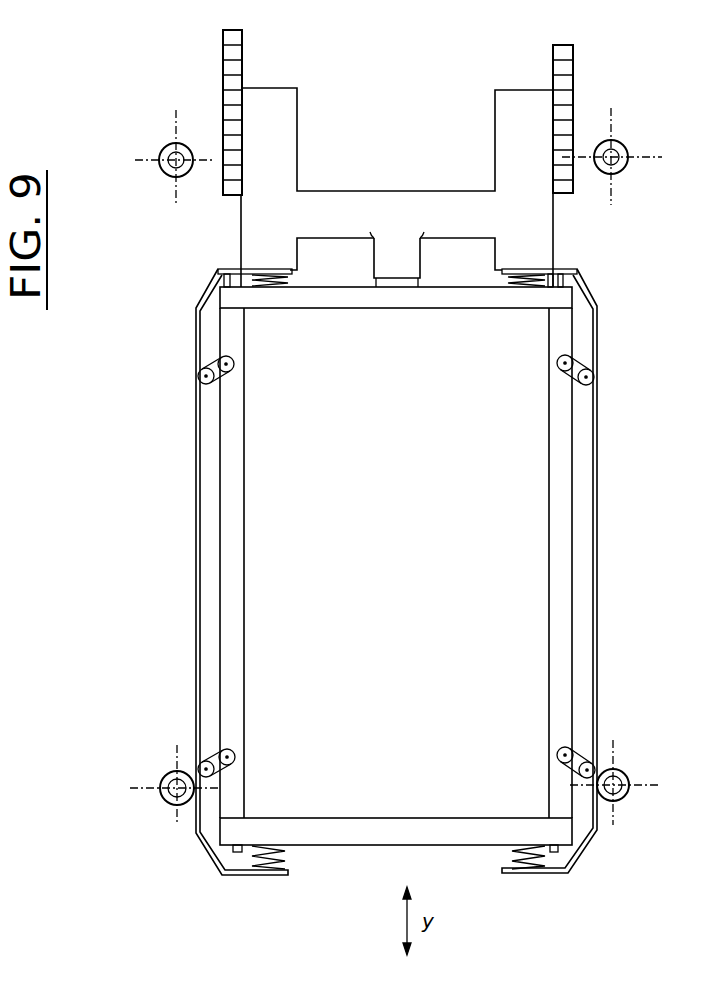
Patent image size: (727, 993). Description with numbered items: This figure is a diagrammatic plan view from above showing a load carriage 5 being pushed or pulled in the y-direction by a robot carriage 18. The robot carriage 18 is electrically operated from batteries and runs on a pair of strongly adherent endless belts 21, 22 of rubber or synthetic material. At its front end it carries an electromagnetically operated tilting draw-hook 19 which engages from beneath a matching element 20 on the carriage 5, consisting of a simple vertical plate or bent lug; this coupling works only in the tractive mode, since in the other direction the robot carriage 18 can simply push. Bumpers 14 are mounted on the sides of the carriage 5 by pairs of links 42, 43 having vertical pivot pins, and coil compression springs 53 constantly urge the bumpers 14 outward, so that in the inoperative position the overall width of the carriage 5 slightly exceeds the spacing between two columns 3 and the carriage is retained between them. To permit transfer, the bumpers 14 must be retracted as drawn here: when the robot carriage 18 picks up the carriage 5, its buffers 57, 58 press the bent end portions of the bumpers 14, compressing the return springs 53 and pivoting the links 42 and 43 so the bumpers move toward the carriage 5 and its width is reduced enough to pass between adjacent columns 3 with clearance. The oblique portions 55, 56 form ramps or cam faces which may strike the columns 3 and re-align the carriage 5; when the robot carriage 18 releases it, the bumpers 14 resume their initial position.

The columns 3 is at (163, 782).
The carriage 5 is at (396, 563).
The bumpers 14 is at (195, 546).
The robot carriage 18 is at (523, 213).
The tilting draw-hook 19 is at (393, 255).
The matching element 20 is at (395, 282).
The endless belt 21 is at (233, 50).
The endless belt 22 is at (562, 65).
The link 42 is at (575, 365).
The link 43 is at (577, 757).
The coil compression spring 53 is at (568, 278).
The oblique portion 55 is at (208, 287).
The oblique portion 56 is at (210, 862).
The buffer 57 is at (263, 260).
The buffer 58 is at (522, 259).